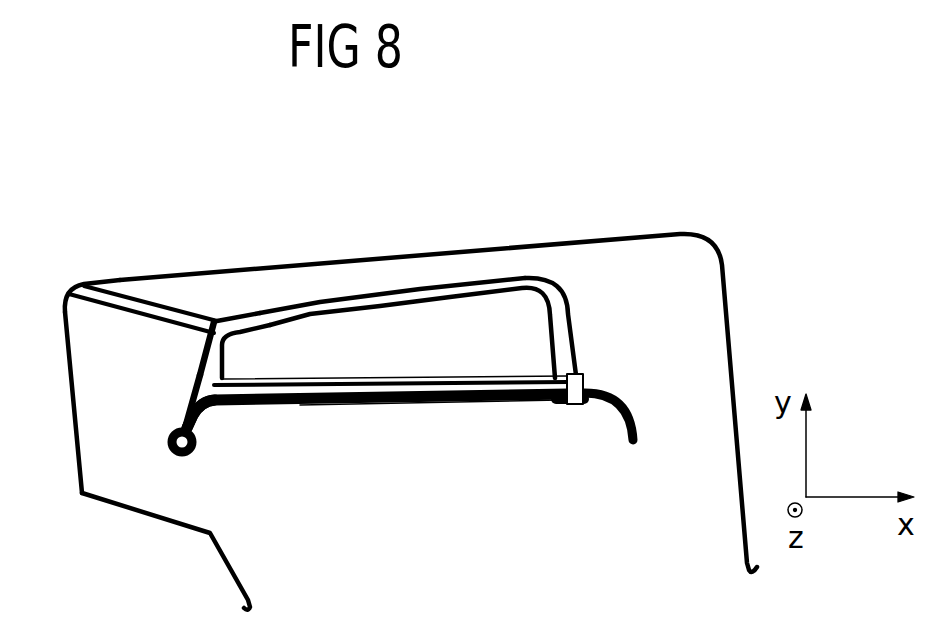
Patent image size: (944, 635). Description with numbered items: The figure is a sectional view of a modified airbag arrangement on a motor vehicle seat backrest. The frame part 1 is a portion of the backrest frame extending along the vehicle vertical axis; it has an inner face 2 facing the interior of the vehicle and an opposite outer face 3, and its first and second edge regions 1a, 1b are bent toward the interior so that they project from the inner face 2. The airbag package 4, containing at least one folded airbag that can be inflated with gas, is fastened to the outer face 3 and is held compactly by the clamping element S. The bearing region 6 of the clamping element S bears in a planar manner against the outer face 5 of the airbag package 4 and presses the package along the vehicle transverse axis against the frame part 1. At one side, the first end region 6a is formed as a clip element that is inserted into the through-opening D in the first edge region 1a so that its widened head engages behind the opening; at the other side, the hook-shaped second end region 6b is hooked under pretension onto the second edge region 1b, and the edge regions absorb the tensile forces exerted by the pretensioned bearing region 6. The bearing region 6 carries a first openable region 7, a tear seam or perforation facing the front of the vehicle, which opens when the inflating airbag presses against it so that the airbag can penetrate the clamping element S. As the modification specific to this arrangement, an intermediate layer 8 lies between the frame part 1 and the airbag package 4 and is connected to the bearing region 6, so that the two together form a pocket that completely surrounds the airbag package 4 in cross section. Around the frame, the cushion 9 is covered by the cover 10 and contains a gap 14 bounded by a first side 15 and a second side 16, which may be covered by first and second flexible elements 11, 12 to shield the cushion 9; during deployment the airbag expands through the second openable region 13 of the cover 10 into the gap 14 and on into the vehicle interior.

The frame part 1 is at (412, 403).
The first edge region 1a is at (628, 442).
The second edge region 1b is at (193, 423).
The inner face 2 is at (293, 407).
The outer face 3 is at (346, 378).
The airbag package 4 is at (472, 366).
The outer face of the airbag package 5 is at (403, 290).
The bearing region 6 is at (493, 278).
The first end region 6a is at (573, 405).
The second end region 6b is at (175, 452).
The first openable region 7 is at (211, 327).
The intermediate layer 8 is at (183, 405).
The cushion 9 is at (247, 543).
The cover 10 is at (733, 333).
The first flexible element 11 is at (222, 320).
The second flexible element 12 is at (138, 355).
The second openable region 13 is at (78, 282).
The gap 14 is at (212, 318).
The first side 15 is at (152, 303).
The second side 16 is at (138, 355).
The clamping element S is at (578, 285).
The through-opening D is at (598, 378).